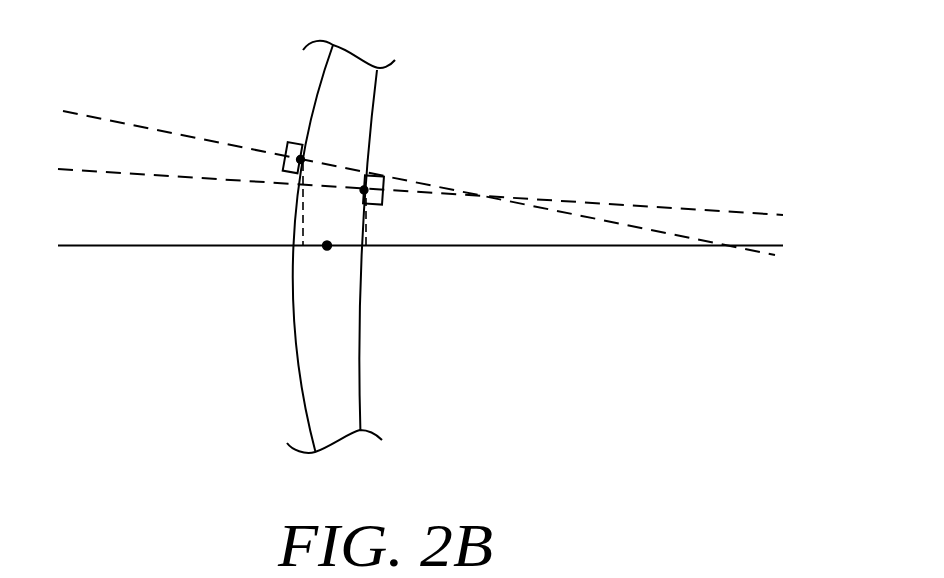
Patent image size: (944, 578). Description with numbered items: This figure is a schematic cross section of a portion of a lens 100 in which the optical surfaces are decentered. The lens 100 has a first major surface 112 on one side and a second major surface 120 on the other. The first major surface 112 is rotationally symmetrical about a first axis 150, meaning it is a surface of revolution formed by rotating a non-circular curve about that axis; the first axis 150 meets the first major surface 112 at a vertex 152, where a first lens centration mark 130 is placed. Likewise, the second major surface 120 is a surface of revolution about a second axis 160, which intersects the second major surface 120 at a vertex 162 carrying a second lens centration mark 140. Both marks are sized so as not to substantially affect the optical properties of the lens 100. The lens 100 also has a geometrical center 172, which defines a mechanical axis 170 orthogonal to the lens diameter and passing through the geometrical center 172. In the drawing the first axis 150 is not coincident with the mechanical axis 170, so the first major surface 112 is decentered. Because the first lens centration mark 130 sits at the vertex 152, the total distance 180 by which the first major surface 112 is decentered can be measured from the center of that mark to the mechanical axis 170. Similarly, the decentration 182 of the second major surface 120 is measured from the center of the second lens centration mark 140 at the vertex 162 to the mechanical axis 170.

The lens 100 is at (518, 79).
The first major surface 112 is at (293, 335).
The second major surface 120 is at (362, 359).
The first lens centration mark 130 is at (287, 152).
The second lens centration mark 140 is at (381, 202).
The first axis 150 is at (118, 110).
The vertex 152 is at (300, 160).
The second axis 160 is at (105, 172).
The vertex 162 is at (364, 190).
The mechanical axis 170 is at (598, 247).
The geometrical center 172 is at (327, 246).
The total distance 180 is at (298, 210).
The decentration 182 is at (367, 245).